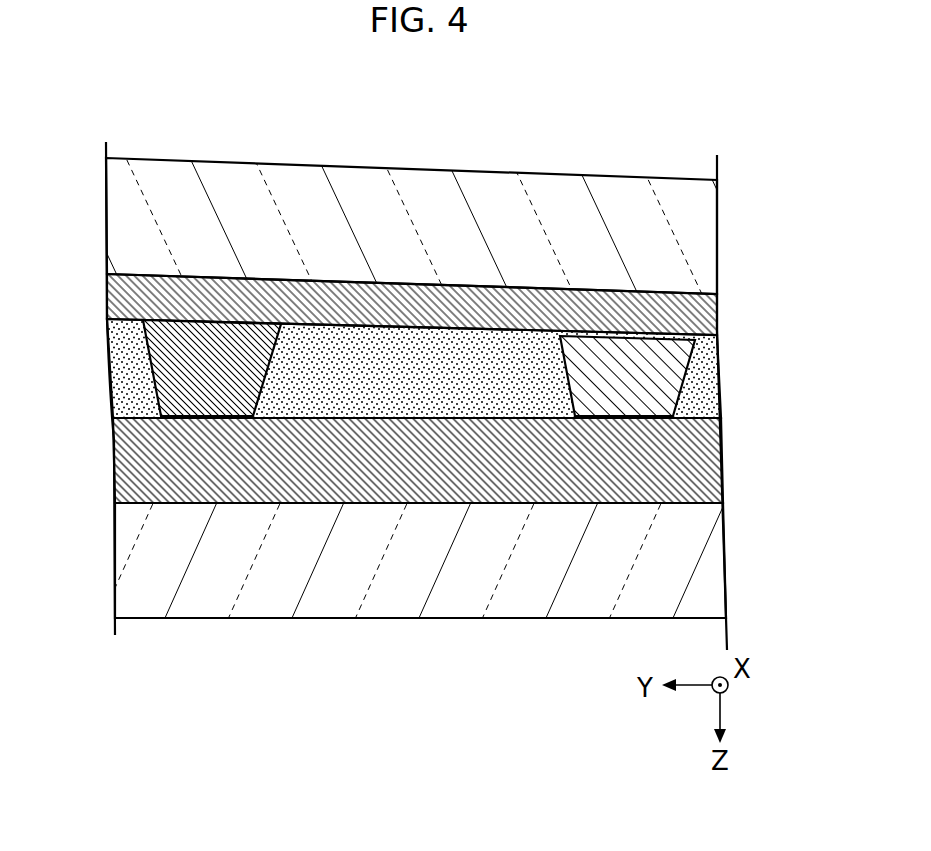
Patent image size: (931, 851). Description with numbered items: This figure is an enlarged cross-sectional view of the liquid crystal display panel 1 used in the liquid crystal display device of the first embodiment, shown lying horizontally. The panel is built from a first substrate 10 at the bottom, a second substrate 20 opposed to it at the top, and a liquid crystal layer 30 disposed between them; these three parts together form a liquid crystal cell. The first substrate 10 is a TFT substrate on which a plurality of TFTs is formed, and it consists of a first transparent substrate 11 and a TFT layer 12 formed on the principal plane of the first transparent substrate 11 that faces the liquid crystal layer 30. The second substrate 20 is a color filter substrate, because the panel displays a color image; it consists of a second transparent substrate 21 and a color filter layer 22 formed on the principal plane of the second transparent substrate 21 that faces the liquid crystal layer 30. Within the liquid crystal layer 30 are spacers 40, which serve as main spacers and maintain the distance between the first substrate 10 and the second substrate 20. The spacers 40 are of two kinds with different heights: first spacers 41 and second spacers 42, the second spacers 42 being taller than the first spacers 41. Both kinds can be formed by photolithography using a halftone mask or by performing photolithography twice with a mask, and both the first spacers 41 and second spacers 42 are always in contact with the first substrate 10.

The liquid crystal display panel 1 is at (782, 133).
The first substrate 10 is at (790, 445).
The first transparent substrate 11 is at (698, 530).
The TFT layer 12 is at (697, 460).
The second substrate 20 is at (790, 210).
The second transparent substrate 21 is at (693, 240).
The color filter layer 22 is at (695, 303).
The liquid crystal layer 30 is at (412, 380).
The spacers 40 is at (205, 122).
The first spacers 41 is at (620, 375).
The second spacers 42 is at (205, 365).